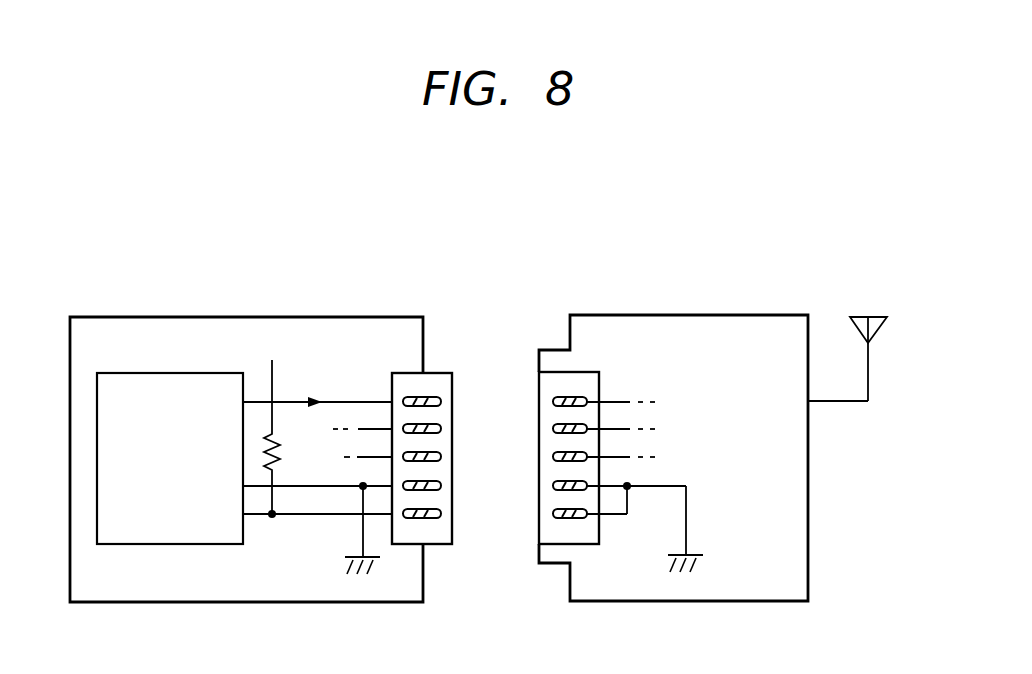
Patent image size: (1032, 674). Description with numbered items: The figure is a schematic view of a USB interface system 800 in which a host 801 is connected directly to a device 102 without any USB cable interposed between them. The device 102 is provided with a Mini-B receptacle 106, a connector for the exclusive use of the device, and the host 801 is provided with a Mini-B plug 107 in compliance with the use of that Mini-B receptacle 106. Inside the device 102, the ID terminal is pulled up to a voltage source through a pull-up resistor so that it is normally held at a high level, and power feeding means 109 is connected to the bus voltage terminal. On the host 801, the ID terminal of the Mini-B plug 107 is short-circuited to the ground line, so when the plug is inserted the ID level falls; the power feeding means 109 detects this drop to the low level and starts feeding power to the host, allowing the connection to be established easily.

The system 800 is at (911, 186).
The device 102 is at (238, 316).
The power feeding means 109 is at (142, 545).
The Mini-B receptacle 106 is at (456, 386).
The Mini-B plug 107 is at (536, 386).
The host 801 is at (705, 314).